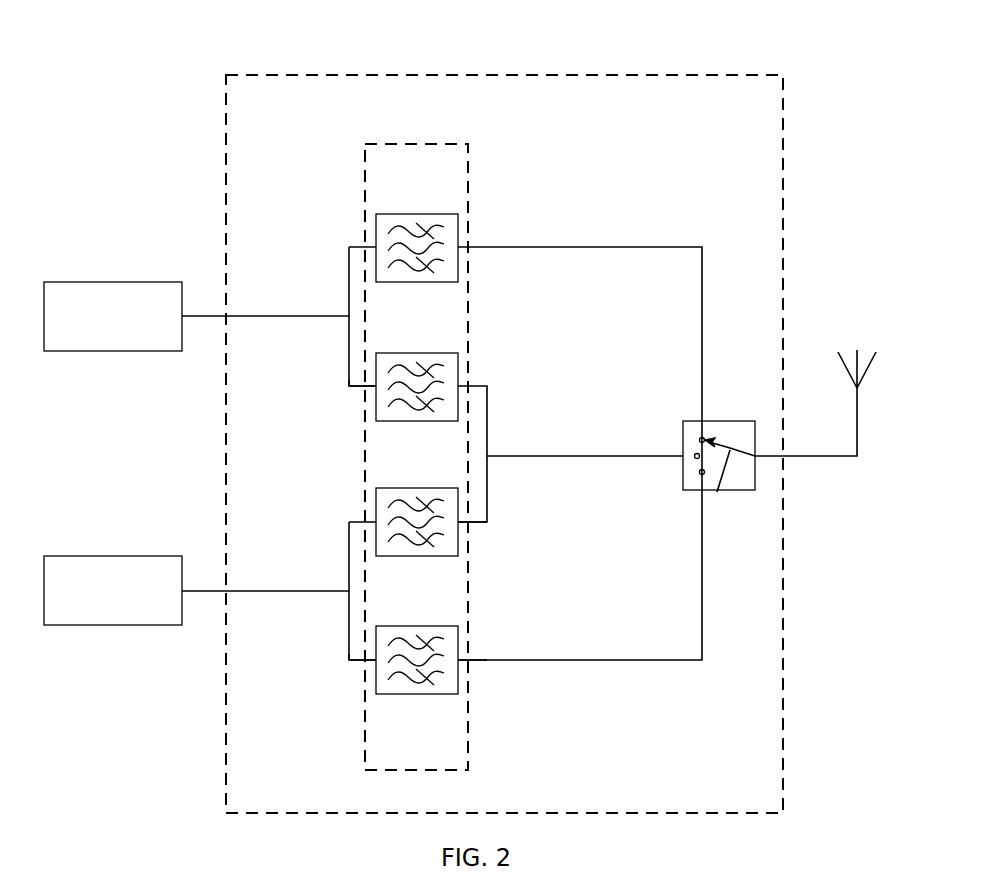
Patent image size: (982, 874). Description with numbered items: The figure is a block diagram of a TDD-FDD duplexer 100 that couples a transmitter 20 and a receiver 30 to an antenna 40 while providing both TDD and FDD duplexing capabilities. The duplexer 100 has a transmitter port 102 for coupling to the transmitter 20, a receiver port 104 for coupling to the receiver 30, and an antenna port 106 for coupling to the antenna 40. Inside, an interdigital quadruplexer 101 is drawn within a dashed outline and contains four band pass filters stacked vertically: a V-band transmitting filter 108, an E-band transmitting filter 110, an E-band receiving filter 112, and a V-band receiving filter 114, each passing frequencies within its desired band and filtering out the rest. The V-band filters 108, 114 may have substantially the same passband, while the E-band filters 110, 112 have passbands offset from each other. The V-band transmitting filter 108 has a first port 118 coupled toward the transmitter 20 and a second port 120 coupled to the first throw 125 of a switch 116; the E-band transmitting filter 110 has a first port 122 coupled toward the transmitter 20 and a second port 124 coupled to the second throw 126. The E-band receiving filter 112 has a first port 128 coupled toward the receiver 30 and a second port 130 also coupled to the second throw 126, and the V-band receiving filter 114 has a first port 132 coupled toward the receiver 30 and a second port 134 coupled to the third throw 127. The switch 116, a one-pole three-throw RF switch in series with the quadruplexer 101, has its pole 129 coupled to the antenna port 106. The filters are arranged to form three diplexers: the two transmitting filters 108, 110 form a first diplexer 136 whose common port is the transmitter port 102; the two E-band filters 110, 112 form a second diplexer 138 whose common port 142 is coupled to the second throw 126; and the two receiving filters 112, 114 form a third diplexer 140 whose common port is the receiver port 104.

The TDD-FDD duplexer 100 is at (338, 75).
The interdigital quadruplexer 101 is at (373, 144).
The transmitter 20 is at (113, 316).
The receiver 30 is at (113, 590).
The antenna 40 is at (857, 341).
The transmitter port 102 is at (200, 314).
The receiver port 104 is at (200, 589).
The antenna port 106 is at (812, 456).
The V-band transmitting filter 108 is at (386, 222).
The E-band transmitting filter 110 is at (386, 360).
The E-band receiving filter 112 is at (386, 496).
The V-band receiving filter 114 is at (386, 634).
The switch 116 is at (728, 421).
The first port 118 is at (349, 246).
The second port 120 is at (474, 247).
The first port 122 is at (349, 386).
The second port 124 is at (476, 386).
The first throw 125 is at (700, 437).
The second throw 126 is at (695, 456).
The third throw 127 is at (700, 474).
The first port 128 is at (349, 523).
The pole 129 is at (717, 492).
The second port 130 is at (473, 522).
The first port 132 is at (352, 662).
The second port 134 is at (466, 661).
The first diplexer 136 is at (460, 305).
The second diplexer 138 is at (340, 452).
The third diplexer 140 is at (460, 605).
The common port 142 is at (490, 457).